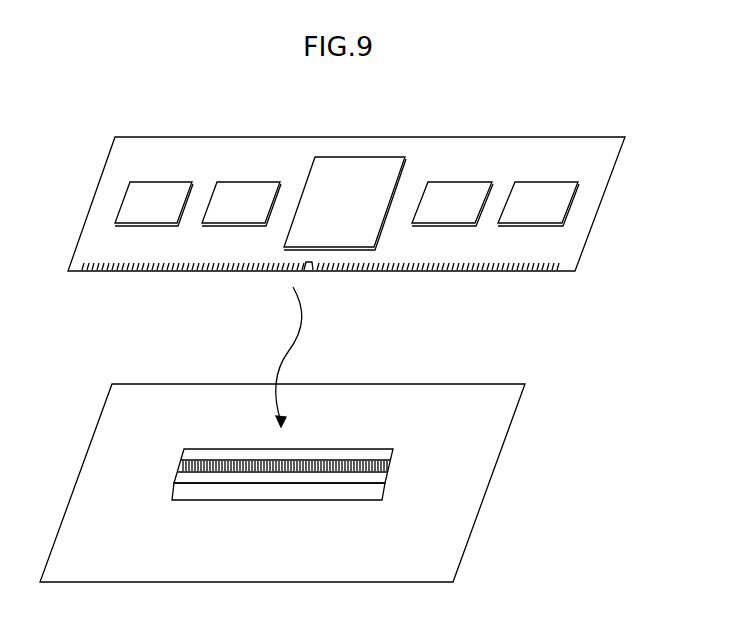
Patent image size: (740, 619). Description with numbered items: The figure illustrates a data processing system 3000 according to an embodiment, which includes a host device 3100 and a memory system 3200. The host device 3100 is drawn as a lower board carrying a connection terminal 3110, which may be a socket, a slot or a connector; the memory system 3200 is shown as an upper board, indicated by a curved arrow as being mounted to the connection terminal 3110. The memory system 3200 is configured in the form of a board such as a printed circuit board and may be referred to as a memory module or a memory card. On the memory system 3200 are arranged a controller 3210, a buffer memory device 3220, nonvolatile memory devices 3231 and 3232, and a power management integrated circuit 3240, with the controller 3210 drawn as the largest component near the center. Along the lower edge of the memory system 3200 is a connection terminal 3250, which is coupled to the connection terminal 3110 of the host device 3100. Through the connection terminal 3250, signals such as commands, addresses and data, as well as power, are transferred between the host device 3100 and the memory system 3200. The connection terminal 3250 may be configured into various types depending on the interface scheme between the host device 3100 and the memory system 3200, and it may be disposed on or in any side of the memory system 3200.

The data processing system 3000 is at (205, 106).
The memory system 3200 is at (346, 223).
The connection terminal 3250 is at (98, 272).
The power management integrated circuit 3240 is at (154, 204).
The buffer memory device 3220 is at (241, 204).
The controller 3210 is at (345, 203).
The nonvolatile memory device 3231 is at (452, 204).
The nonvolatile memory device 3232 is at (538, 204).
The host device 3100 is at (282, 483).
The connection terminal 3110 is at (411, 446).